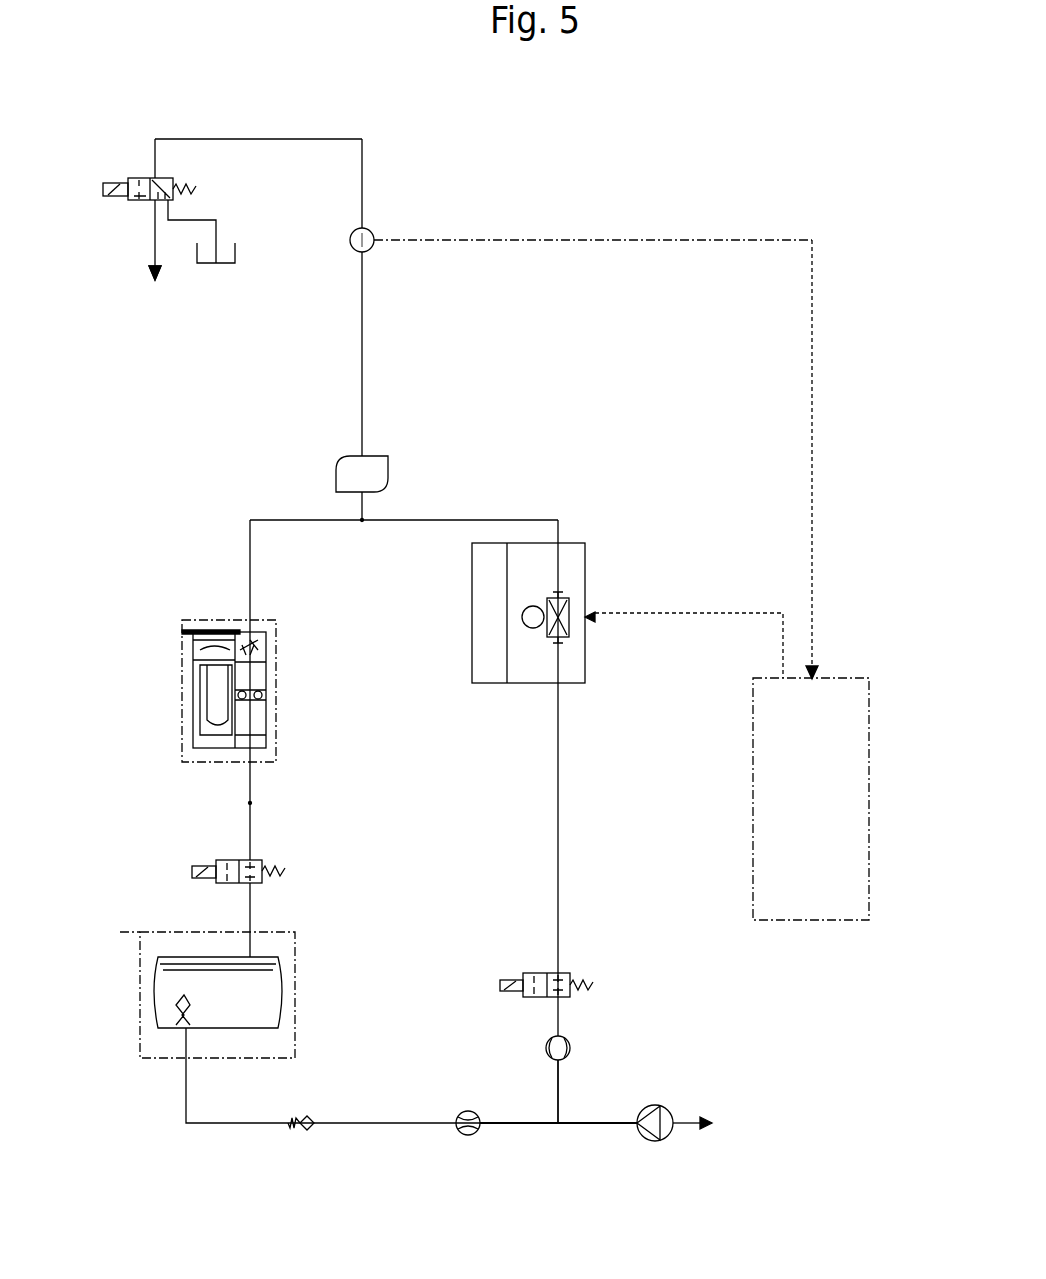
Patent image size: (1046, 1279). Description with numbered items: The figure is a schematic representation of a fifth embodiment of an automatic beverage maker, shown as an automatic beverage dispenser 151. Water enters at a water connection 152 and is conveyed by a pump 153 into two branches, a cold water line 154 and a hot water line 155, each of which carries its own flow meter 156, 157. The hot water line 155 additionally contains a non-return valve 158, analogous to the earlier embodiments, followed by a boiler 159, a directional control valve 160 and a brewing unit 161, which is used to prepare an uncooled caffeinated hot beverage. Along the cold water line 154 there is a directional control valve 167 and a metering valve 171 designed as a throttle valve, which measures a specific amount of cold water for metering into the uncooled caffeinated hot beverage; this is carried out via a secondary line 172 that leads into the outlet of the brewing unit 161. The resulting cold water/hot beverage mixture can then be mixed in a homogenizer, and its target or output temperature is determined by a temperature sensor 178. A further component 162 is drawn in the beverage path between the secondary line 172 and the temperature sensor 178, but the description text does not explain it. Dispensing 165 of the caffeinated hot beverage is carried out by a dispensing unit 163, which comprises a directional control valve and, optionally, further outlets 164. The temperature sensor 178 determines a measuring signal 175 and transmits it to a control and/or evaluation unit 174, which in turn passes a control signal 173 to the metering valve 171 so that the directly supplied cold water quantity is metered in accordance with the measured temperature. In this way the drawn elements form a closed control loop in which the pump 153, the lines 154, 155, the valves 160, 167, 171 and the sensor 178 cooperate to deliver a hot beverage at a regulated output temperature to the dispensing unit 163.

The automatic beverage dispenser 151 is at (842, 519).
The water connection 152 is at (708, 1130).
The pump 153 is at (641, 1139).
The cold water line 154 is at (560, 1087).
The hot water line 155 is at (505, 1126).
The flow meter 156 is at (572, 1040).
The flow meter 157 is at (458, 1135).
The non-return valve 158 is at (300, 1131).
The boiler 159 is at (296, 1013).
The directional control valve 160 is at (256, 862).
The brewing unit 161 is at (275, 724).
The filter 162 is at (334, 466).
The dispensing unit 163 is at (138, 177).
The further outlets 164 is at (241, 246).
The dispensing 165 is at (148, 273).
The directional control valve 167 is at (575, 975).
The metering valve 171 is at (586, 574).
The secondary line 172 is at (475, 518).
The control signal 173 is at (678, 615).
The control and/or evaluation unit 174 is at (870, 736).
The measuring signal 175 is at (812, 400).
The temperature sensor 178 is at (370, 232).